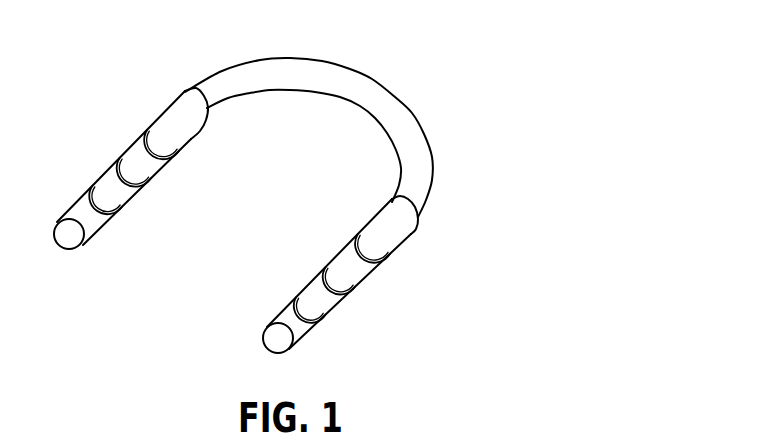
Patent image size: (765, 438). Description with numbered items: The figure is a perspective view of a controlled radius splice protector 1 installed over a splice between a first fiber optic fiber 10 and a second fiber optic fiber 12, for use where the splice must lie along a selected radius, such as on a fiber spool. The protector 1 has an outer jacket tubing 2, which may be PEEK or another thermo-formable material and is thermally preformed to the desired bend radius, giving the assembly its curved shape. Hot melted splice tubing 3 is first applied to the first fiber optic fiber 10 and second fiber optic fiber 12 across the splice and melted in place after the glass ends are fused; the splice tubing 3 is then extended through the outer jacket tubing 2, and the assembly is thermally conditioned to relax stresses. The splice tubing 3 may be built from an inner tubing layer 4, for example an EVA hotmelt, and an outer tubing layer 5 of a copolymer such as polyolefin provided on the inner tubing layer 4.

The controlled radius splice protector 1 is at (272, 187).
The outer jacket tubing 2 is at (418, 172).
The hot melted splice tubing 3 is at (380, 279).
The inner tubing layer 4 is at (127, 181).
The outer tubing layer 5 is at (158, 148).
The first fiber optic fiber 10 is at (90, 214).
The second fiber optic fiber 12 is at (300, 325).